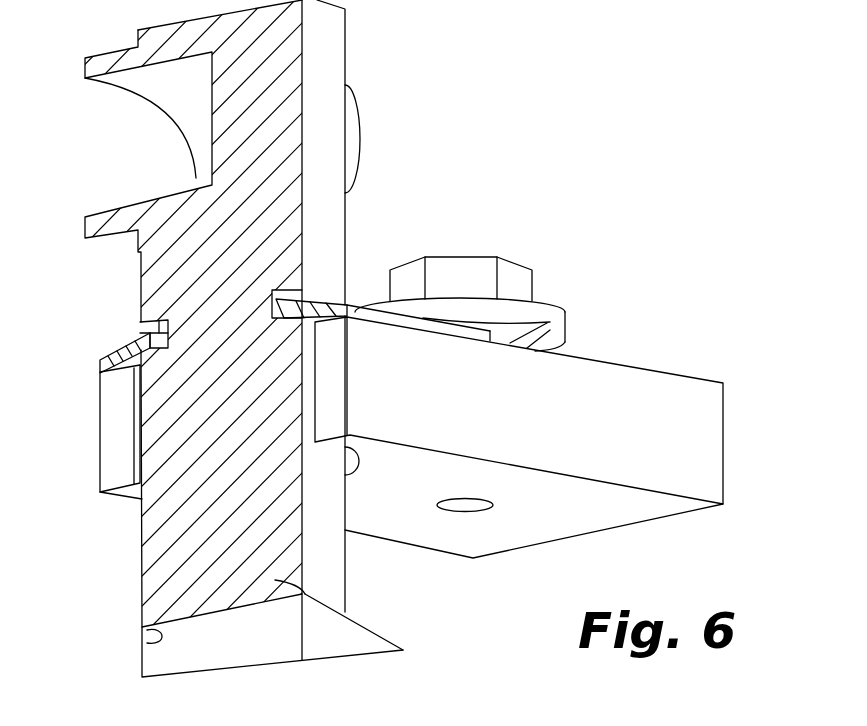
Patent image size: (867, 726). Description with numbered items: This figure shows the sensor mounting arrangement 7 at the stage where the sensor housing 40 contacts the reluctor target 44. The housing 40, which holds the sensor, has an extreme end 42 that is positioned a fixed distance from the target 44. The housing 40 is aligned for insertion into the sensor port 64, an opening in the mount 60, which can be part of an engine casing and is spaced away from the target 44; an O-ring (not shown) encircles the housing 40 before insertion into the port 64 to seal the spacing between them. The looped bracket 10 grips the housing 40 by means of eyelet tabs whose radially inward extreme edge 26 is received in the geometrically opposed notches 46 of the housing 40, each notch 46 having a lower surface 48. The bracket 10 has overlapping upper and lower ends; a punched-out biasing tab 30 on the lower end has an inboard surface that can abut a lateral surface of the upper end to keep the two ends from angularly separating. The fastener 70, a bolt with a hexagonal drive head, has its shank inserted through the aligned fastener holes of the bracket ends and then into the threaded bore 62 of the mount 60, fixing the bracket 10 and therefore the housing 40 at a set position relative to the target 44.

The arrangement for mounting a sensor 7 is at (478, 212).
The bracket 10 is at (362, 300).
The radially inward extreme edge 26 is at (128, 348).
The biasing tab 30 is at (567, 315).
The housing 40 is at (346, 221).
The extreme end 42 is at (147, 640).
The reluctor target 44 is at (381, 628).
The notches 46 is at (160, 324).
The lower surface 48 is at (270, 320).
The mount 60 is at (723, 457).
The threaded bore 62 is at (479, 503).
The sensor port 64 is at (142, 442).
The fastener 70 is at (530, 265).